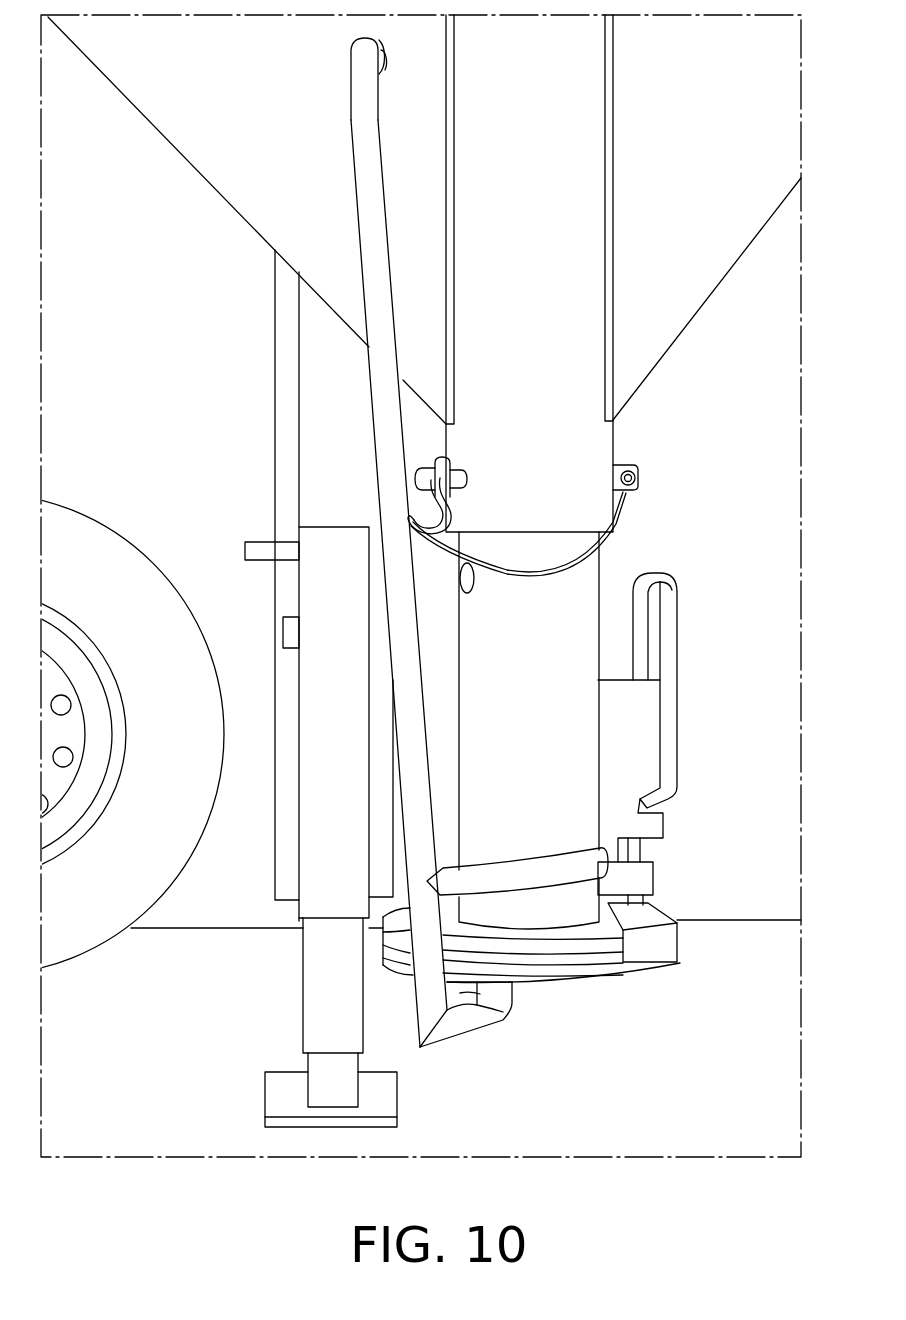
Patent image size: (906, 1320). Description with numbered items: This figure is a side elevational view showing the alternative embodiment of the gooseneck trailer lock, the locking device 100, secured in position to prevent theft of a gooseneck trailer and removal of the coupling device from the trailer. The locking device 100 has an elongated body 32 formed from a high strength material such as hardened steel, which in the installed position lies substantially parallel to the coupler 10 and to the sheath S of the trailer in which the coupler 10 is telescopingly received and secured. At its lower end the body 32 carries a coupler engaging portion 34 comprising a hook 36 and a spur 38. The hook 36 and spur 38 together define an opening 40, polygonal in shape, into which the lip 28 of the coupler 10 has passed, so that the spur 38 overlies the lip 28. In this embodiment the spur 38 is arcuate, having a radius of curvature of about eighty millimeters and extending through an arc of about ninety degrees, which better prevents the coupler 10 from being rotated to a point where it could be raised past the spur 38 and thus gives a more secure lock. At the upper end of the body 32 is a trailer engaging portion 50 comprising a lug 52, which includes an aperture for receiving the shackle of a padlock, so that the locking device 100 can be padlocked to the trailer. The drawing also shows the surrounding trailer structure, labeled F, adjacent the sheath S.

The coupler 10 is at (700, 702).
The lip 28 is at (607, 982).
The body 32 is at (390, 362).
The coupler engaging portion 34 is at (440, 1062).
The hook 36 is at (467, 1028).
The spur 38 is at (513, 873).
The opening 40 is at (467, 993).
The trailer engaging portion 50 is at (335, 59).
The lug 52 is at (393, 60).
The locking device 100 is at (328, 383).
The frame F is at (245, 98).
The sheath S is at (573, 597).